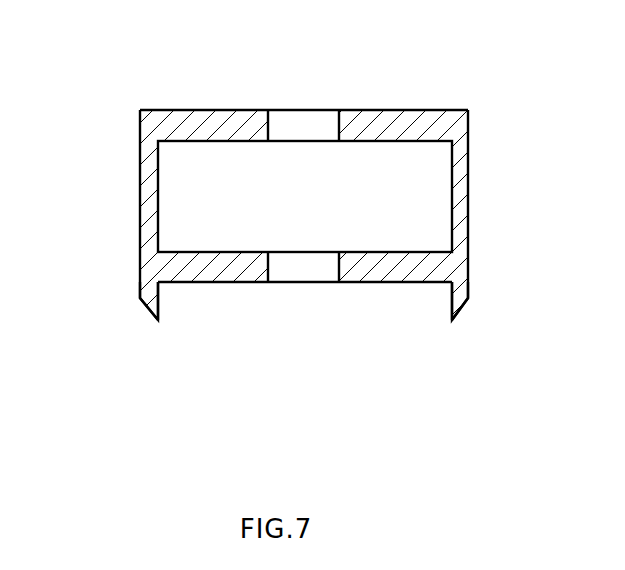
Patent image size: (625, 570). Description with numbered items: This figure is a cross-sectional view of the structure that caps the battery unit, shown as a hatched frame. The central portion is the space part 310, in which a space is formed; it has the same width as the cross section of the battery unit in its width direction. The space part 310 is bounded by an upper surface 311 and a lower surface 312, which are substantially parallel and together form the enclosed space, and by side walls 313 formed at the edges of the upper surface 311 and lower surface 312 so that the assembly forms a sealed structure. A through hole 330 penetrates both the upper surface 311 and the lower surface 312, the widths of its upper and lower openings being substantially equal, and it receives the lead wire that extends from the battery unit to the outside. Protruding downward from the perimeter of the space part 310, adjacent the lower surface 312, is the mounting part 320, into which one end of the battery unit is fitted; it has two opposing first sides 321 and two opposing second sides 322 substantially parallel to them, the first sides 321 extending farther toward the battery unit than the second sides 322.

The space part 310 is at (202, 205).
The upper surface 311 is at (415, 115).
The lower surface 312 is at (383, 270).
The side walls 313 is at (148, 166).
The mounting part 320 is at (140, 302).
The first sides 321 is at (160, 298).
The second sides 322 is at (140, 286).
The through hole 330 is at (338, 268).